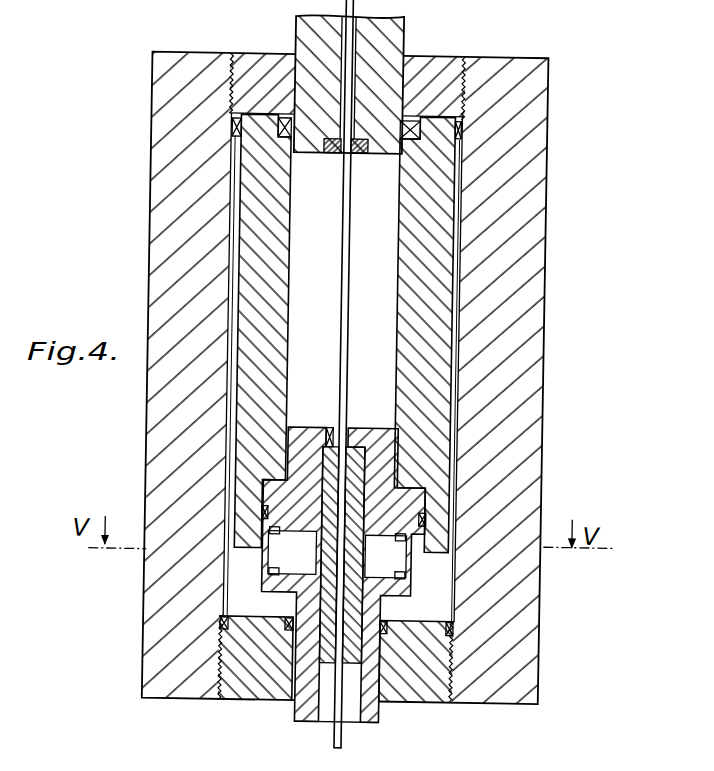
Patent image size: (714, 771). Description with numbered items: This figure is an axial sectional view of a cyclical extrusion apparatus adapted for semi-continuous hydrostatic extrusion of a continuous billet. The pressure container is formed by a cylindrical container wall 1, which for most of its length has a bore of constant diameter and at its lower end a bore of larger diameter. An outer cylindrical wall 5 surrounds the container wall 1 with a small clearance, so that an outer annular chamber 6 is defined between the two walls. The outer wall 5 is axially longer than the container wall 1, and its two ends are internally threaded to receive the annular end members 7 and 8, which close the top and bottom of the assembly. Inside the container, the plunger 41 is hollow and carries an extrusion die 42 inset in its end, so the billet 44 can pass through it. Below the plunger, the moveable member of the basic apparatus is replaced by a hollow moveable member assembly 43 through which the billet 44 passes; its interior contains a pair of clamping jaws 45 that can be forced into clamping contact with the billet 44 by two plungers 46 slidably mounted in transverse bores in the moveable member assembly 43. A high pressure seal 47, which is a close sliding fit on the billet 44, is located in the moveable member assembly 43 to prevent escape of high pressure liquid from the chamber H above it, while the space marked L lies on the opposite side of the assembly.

The cylindrical container wall 1 is at (409, 333).
The outer cylindrical wall 5 is at (519, 336).
The outer annular chamber 6 is at (455, 397).
The annular end member 7 is at (429, 694).
The annular end member 8 is at (432, 63).
The plunger 41 is at (318, 158).
The extrusion die 42 is at (364, 158).
The moveable member assembly 43 is at (249, 496).
The billet 44 is at (340, 363).
The clamping jaws 45 is at (330, 650).
The plungers 46 is at (284, 564).
The high pressure seal 47 is at (329, 445).
The chamber H is at (316, 296).
The low pressure chamber L is at (255, 601).